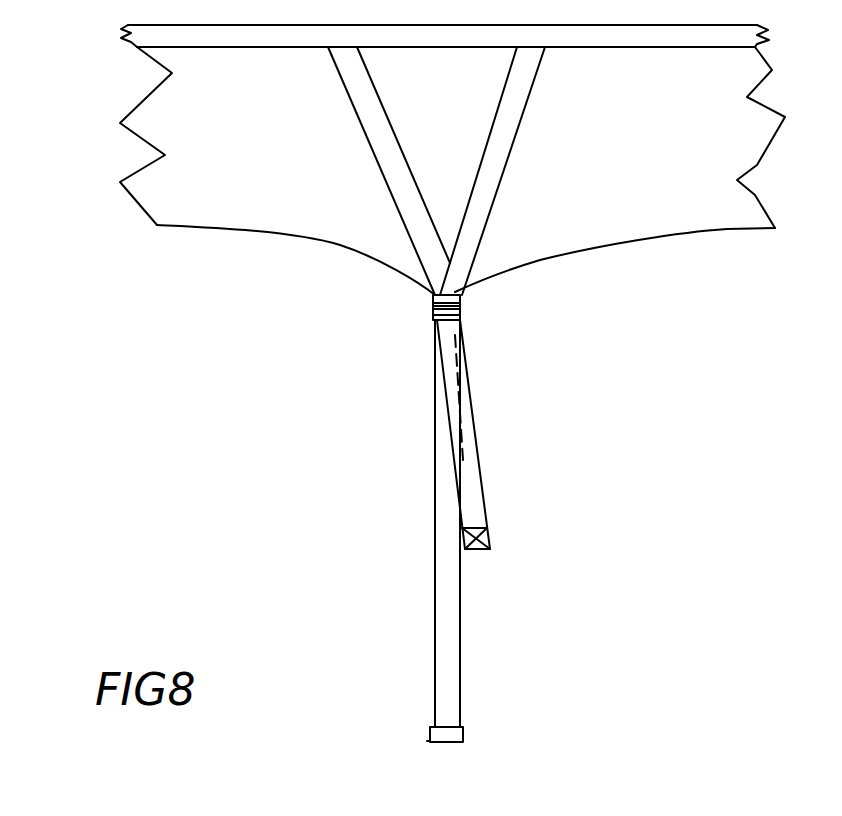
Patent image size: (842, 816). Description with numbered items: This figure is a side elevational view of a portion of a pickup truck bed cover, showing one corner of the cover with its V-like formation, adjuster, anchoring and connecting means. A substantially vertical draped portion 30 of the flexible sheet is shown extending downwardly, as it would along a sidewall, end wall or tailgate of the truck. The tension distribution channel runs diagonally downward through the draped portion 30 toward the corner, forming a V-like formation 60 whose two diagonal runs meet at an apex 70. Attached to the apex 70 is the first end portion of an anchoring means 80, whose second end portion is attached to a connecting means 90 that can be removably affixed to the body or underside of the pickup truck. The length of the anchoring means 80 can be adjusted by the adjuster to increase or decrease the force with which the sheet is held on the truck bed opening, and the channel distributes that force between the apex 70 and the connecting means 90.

The substantially vertical draped portion 30 is at (705, 212).
The V-like formation 60 is at (519, 168).
The apex 70 is at (463, 284).
The anchoring means 80 is at (460, 583).
The connecting means 90 is at (463, 733).